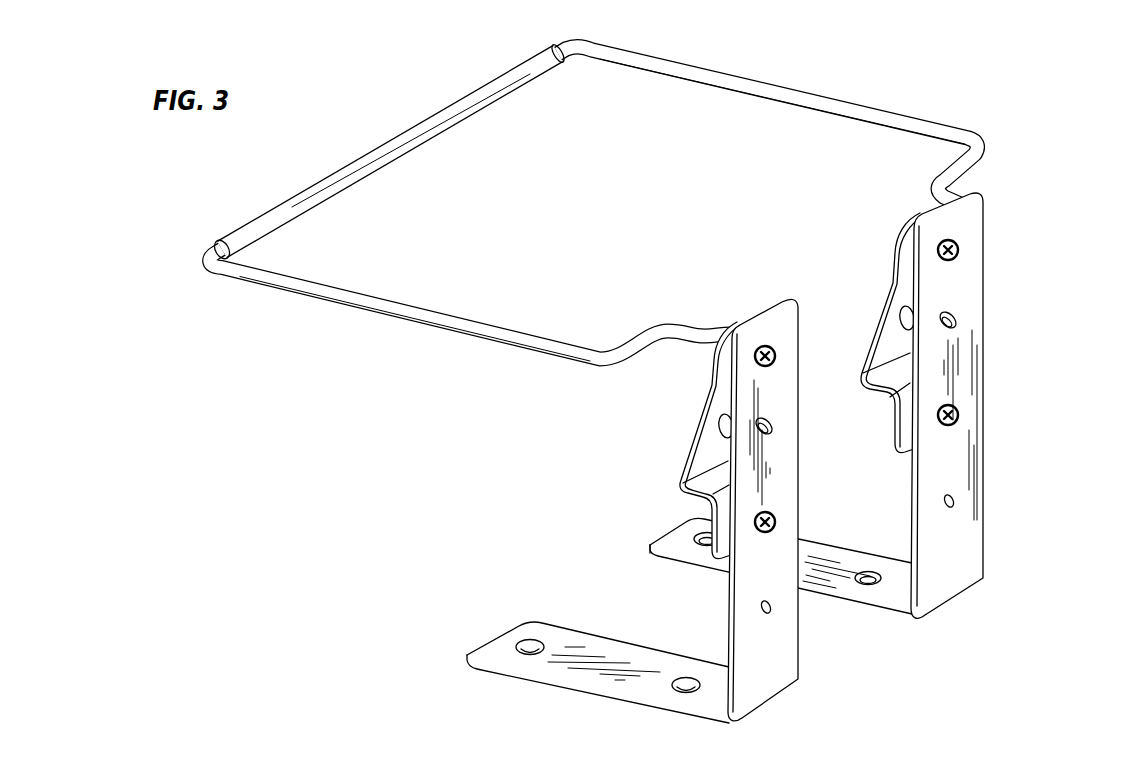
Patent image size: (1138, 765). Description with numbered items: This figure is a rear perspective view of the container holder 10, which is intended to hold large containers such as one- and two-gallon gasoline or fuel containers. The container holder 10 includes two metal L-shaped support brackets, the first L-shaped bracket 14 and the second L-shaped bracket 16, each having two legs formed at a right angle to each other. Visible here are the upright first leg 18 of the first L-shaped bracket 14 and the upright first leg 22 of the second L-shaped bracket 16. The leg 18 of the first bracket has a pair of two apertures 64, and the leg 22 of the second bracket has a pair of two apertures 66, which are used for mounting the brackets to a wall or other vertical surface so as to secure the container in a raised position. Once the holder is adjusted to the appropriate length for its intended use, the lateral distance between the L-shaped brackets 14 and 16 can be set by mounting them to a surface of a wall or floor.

The container holder 10 is at (968, 66).
The first L-shaped bracket 14 is at (874, 405).
The second L-shaped bracket 16 is at (669, 511).
The first leg 18 is at (960, 560).
The first leg 22 is at (778, 661).
The apertures 64 is at (957, 320).
The apertures 66 is at (772, 426).